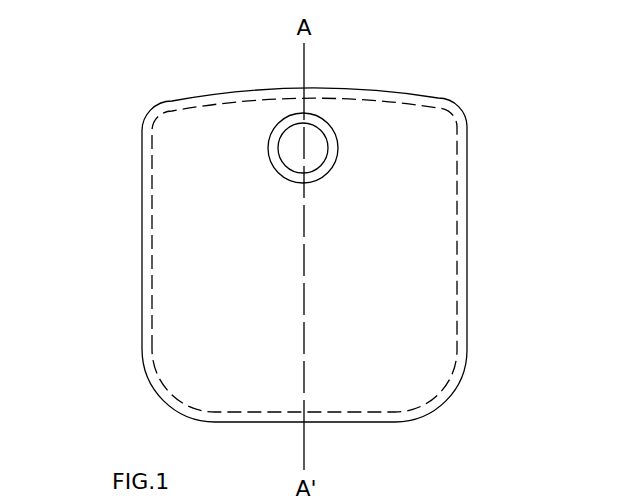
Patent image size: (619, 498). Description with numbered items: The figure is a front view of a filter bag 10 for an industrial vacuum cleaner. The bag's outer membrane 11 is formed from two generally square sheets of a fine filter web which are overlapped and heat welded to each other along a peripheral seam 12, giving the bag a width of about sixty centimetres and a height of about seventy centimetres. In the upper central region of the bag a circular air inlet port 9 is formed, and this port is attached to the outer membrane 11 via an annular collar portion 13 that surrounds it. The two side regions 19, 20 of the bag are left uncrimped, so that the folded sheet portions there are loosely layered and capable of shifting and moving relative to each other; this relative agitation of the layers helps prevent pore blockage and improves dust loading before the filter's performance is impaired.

The circular air inlet port 9 is at (316, 139).
The filter bag 10 is at (497, 88).
The outer membrane 11 is at (426, 318).
The peripheral seam 12 is at (148, 300).
The annular collar portion 13 is at (285, 125).
The side region 19 is at (490, 196).
The side region 20 is at (120, 198).